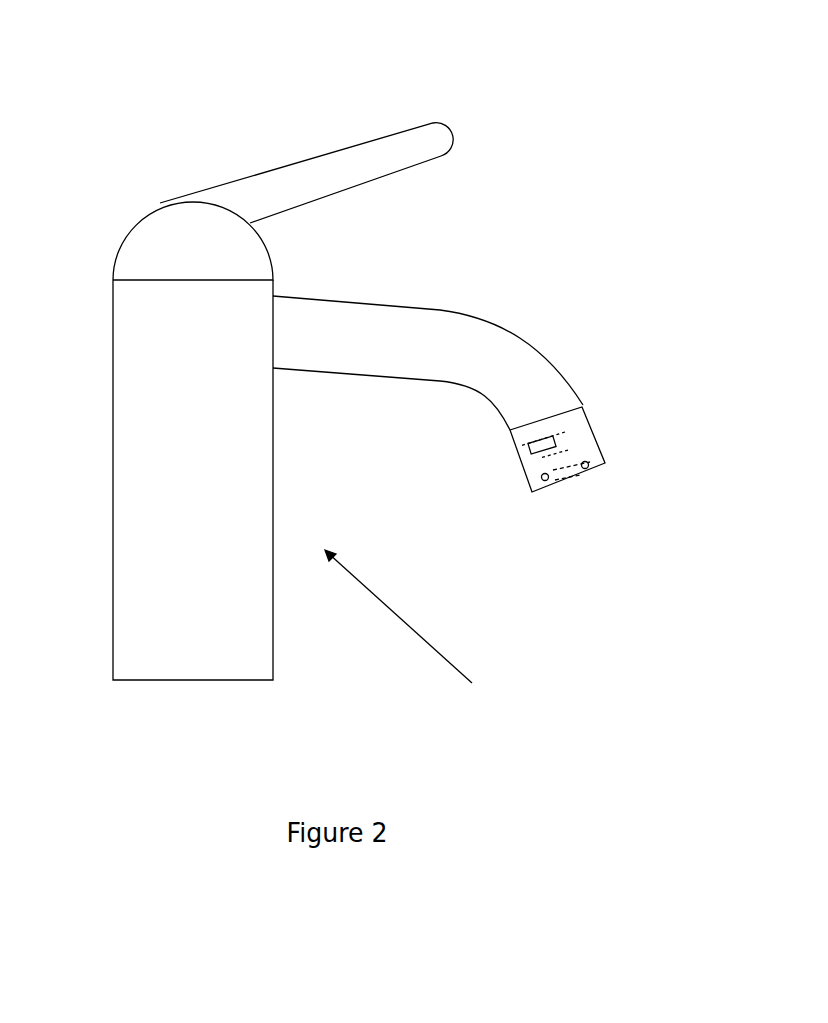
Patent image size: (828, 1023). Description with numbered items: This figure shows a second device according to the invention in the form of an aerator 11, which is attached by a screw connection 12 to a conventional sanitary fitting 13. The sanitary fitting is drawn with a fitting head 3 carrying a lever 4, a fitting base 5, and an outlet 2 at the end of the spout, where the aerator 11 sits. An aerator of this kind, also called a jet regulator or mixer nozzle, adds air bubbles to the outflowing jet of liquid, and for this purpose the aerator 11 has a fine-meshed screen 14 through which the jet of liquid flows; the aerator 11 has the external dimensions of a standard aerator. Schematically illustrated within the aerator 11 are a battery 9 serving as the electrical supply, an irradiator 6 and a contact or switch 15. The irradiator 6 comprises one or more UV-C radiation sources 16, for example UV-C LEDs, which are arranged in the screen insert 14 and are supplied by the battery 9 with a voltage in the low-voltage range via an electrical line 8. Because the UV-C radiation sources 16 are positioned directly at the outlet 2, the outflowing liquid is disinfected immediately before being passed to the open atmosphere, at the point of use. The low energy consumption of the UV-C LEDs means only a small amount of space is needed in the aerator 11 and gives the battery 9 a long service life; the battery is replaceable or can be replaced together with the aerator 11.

The outlet 2 is at (568, 450).
The fitting head 3 is at (145, 215).
The lever 4 is at (343, 147).
The fitting base 5 is at (272, 617).
The irradiator 6 is at (589, 468).
The electrical line 8 is at (537, 462).
The battery 9 is at (530, 448).
The aerator 11 is at (613, 410).
The screw connection 12 is at (582, 407).
The sanitary fitting 13 is at (416, 636).
The screen 14 is at (545, 481).
The contact or switch 15 is at (567, 432).
The UV-C radiation sources 16 is at (555, 481).